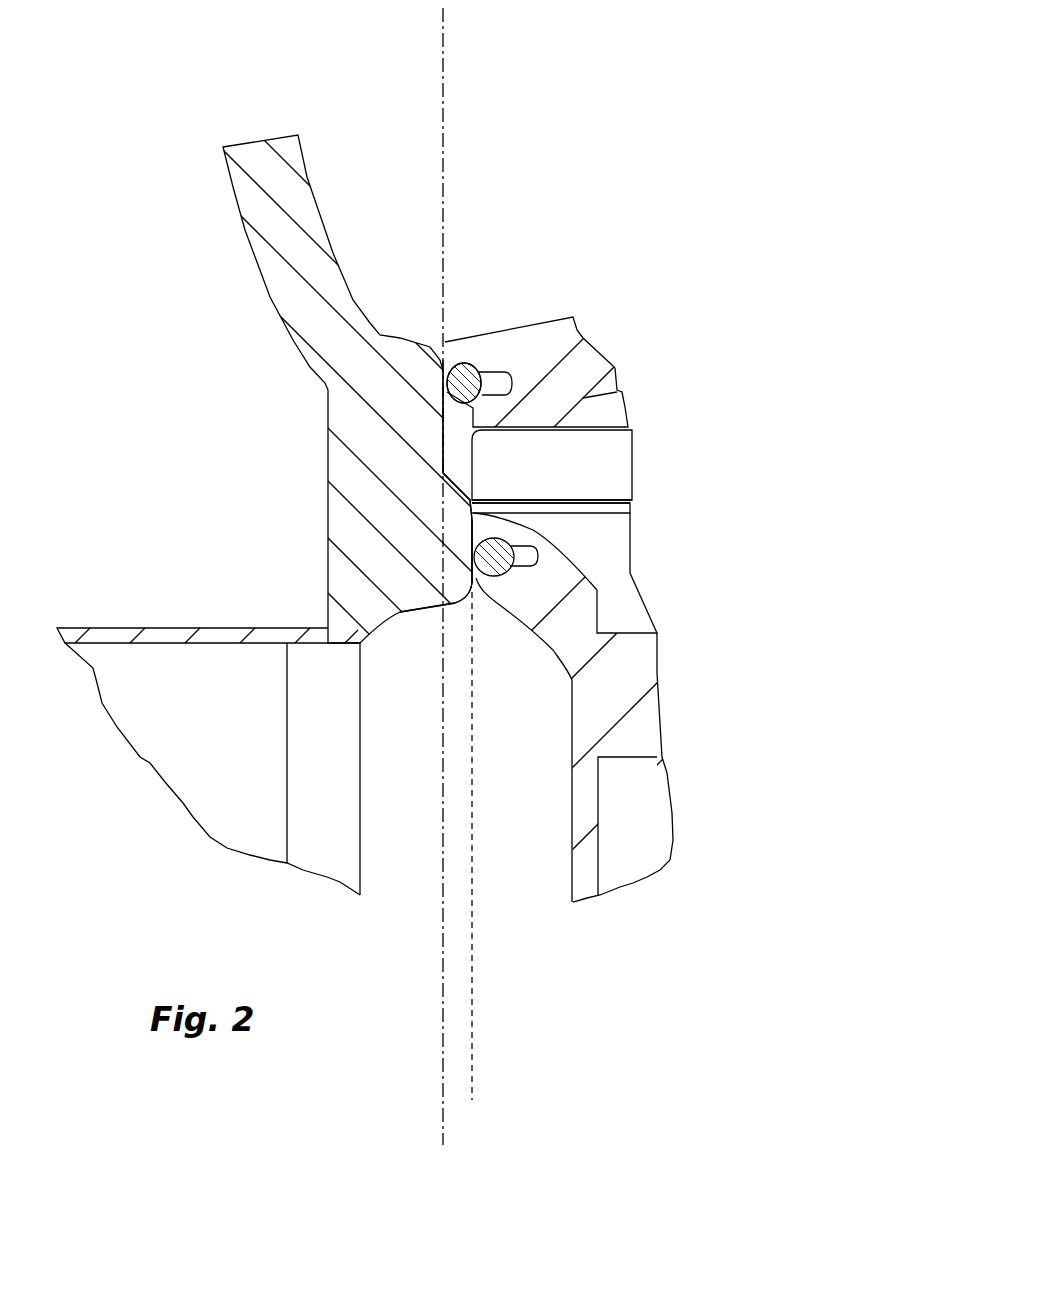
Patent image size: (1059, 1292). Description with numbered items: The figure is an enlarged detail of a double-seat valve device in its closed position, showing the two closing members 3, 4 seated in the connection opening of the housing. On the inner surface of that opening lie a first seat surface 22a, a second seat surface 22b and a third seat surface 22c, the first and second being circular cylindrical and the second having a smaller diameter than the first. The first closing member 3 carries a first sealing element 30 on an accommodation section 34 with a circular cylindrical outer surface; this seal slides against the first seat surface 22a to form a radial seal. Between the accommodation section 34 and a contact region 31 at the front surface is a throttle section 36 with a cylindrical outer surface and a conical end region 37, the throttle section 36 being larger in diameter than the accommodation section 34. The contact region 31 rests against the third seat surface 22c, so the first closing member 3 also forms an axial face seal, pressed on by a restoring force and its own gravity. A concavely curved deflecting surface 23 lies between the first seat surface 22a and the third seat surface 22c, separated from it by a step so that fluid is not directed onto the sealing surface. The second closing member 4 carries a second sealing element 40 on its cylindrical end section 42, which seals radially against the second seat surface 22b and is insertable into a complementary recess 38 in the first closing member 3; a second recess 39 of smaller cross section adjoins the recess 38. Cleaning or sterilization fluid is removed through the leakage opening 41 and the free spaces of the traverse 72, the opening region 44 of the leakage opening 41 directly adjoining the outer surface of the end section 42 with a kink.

The first closing member 3 is at (575, 372).
The second closing member 4 is at (577, 608).
The first seat surface 22a is at (442, 390).
The second seat surface 22b is at (473, 580).
The third seat surface 22c is at (463, 532).
The deflecting surface 23 is at (441, 470).
The first sealing element 30 is at (465, 381).
The contact region 31 is at (473, 517).
The accommodation section 34 is at (443, 363).
The throttle section 36 is at (438, 430).
The conical end region 37 is at (482, 488).
The recess 38 is at (490, 475).
The second recess 39 is at (578, 417).
The second sealing element 40 is at (497, 558).
The leakage opening 41 is at (603, 833).
The end section 42 is at (458, 545).
The opening region 44 is at (540, 516).
The traverse 72 is at (632, 645).